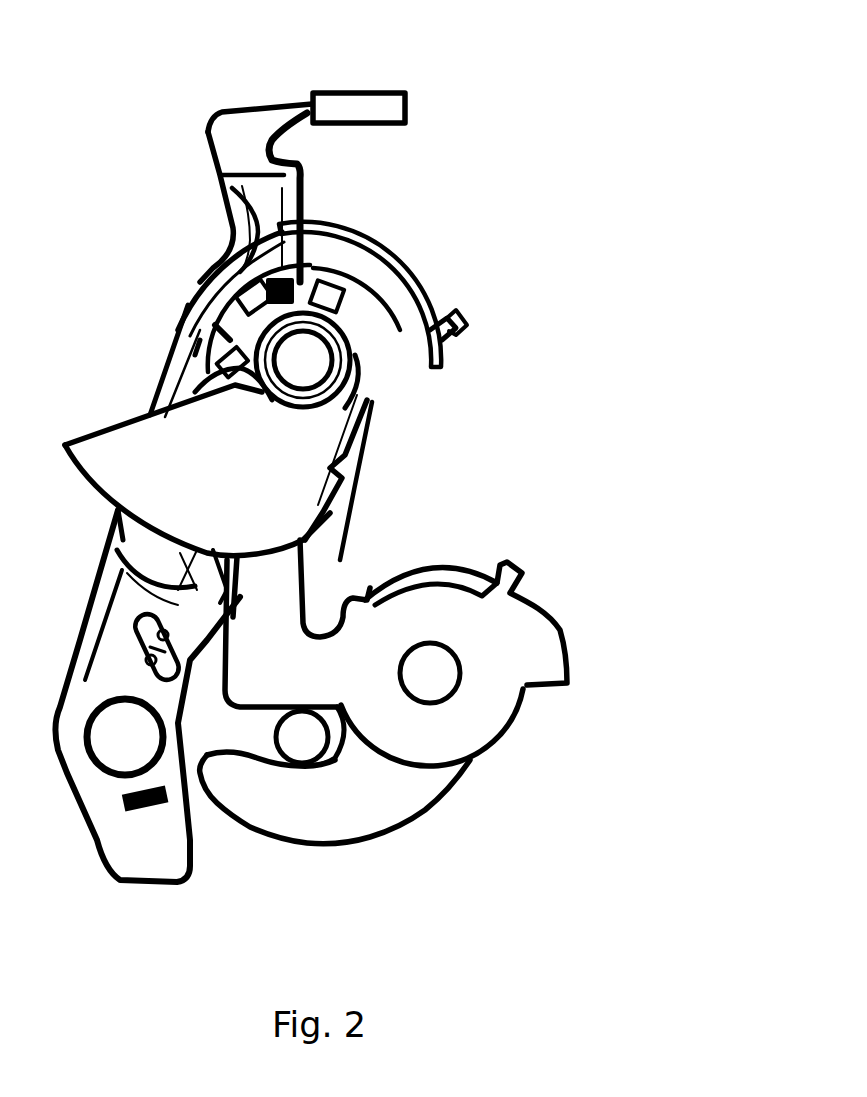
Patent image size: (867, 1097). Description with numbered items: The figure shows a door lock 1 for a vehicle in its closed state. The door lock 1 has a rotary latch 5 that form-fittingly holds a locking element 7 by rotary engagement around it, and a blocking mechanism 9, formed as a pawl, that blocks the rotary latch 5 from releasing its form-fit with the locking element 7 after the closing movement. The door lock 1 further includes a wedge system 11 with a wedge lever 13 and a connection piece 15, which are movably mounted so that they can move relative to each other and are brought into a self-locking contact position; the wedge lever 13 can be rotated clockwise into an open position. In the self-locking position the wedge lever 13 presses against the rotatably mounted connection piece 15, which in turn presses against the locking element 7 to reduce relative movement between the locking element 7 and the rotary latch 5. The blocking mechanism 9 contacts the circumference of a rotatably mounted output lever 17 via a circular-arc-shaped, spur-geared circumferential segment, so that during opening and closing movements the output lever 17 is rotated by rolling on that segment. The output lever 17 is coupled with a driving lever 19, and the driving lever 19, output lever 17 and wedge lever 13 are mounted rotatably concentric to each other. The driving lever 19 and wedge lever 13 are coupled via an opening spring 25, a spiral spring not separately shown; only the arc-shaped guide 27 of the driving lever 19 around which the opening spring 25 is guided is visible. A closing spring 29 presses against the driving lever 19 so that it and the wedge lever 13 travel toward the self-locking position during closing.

The door lock 1 is at (153, 134).
The rotary latch 5 is at (437, 787).
The locking element 7 is at (302, 748).
The blocking mechanism 9 is at (113, 673).
The wedge system 11 is at (291, 471).
The wedge lever 13 is at (173, 433).
The connection piece 15 is at (290, 570).
The output lever 17 is at (347, 372).
The driving lever 19 is at (232, 188).
The opening spring 25 is at (376, 274).
The arc-shaped guide 27 is at (397, 252).
The closing spring 29 is at (407, 95).